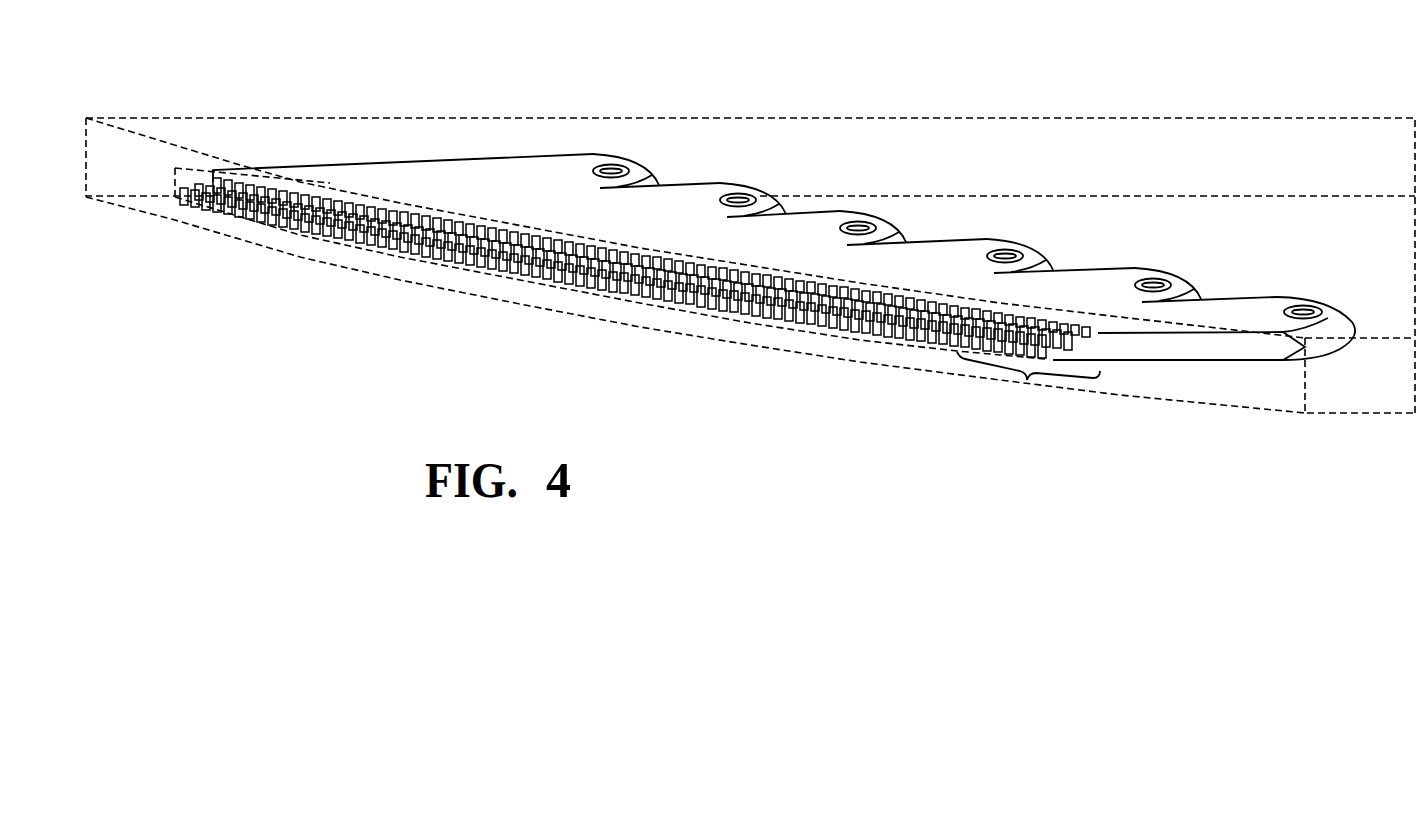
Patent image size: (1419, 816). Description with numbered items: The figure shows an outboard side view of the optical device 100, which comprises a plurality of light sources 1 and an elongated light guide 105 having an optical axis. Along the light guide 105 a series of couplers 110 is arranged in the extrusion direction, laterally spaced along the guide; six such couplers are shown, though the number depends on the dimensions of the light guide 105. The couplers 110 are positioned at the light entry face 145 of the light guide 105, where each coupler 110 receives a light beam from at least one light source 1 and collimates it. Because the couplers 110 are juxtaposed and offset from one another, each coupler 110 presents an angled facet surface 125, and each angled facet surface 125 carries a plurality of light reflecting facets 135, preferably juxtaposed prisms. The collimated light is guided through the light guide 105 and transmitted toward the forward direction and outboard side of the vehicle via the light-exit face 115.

The optical device 100 is at (1118, 230).
The light guide 105 is at (456, 180).
The light source 1 is at (612, 165).
The light entry face 145 is at (733, 184).
The angled facet surface 125 is at (1263, 297).
The coupler 110 is at (1238, 318).
The light-exit face 115 is at (783, 318).
The light reflecting facets 135 is at (1027, 378).